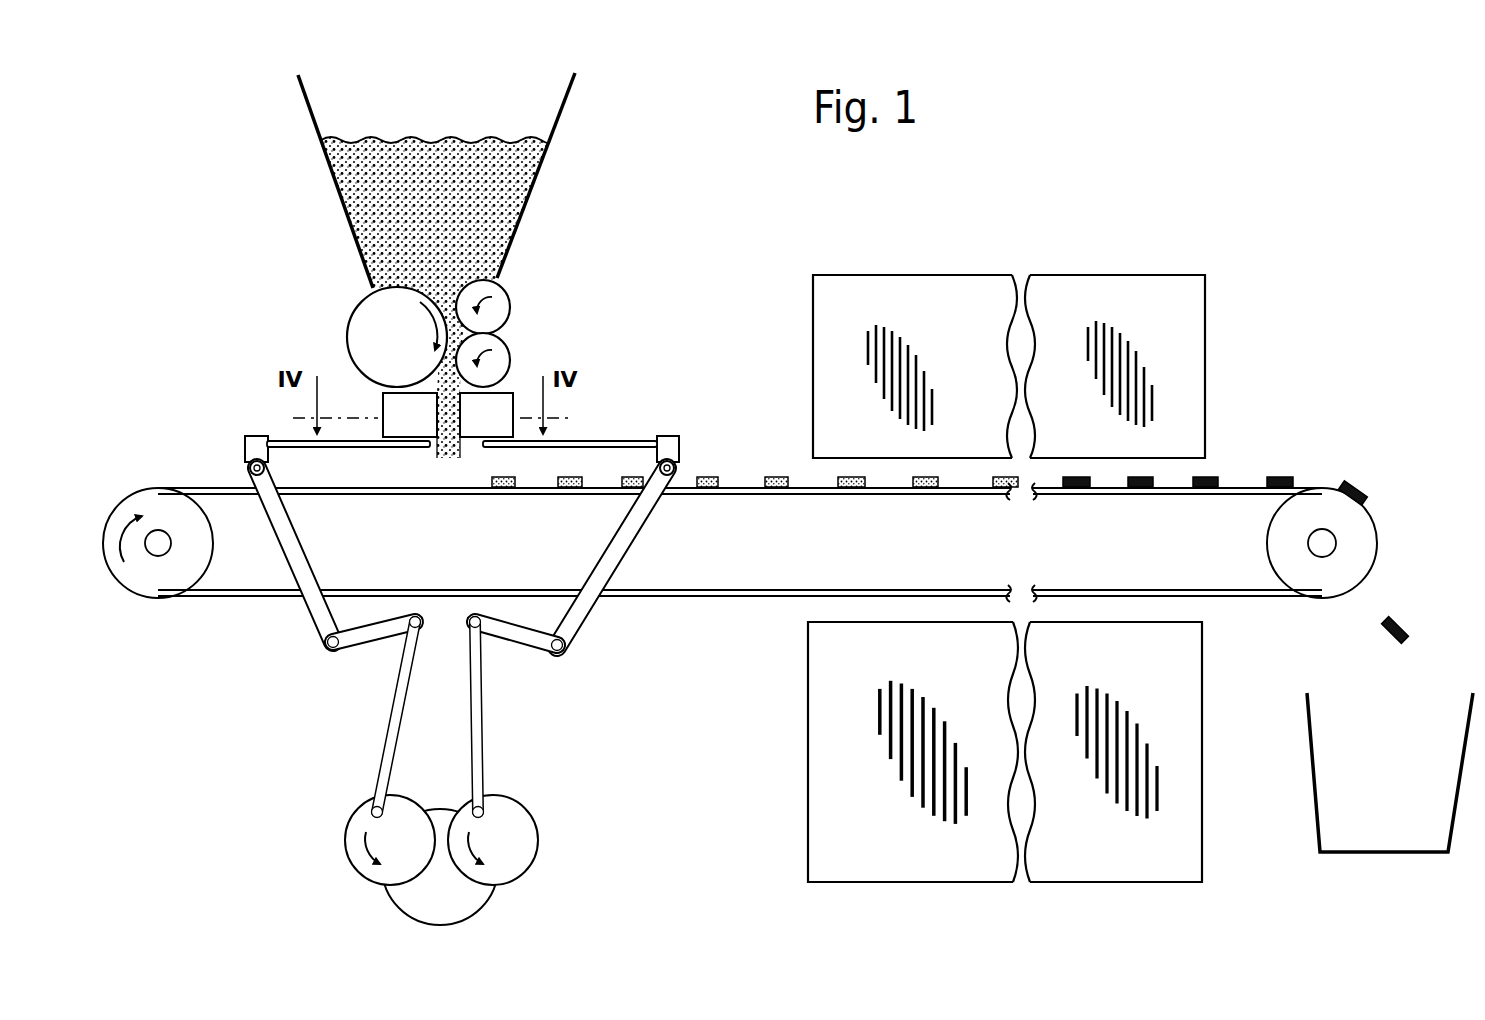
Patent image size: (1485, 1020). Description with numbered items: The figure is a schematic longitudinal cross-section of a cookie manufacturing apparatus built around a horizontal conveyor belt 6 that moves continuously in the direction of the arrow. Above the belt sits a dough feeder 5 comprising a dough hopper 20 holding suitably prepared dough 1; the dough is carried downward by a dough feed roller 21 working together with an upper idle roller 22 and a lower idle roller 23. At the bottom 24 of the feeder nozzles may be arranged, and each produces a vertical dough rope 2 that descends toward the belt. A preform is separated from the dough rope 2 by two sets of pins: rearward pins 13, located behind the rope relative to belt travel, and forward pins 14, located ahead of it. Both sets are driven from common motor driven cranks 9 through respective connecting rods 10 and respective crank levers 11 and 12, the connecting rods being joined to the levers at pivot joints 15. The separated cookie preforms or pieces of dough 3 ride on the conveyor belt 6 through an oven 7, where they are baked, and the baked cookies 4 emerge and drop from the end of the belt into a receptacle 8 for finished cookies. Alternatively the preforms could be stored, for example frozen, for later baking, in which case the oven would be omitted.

The dough 1 is at (442, 152).
The dough rope 2 is at (437, 451).
The cookie preforms 3 is at (509, 477).
The baked cookies 4 is at (1280, 477).
The dough feeder 5 is at (340, 207).
The conveyor belt 6 is at (223, 486).
The oven 7 is at (908, 292).
The receptacle 8 is at (1309, 793).
The cranks 9 is at (346, 841).
The connecting rods 10 is at (384, 753).
The crank lever 11 is at (317, 632).
The crank lever 12 is at (580, 630).
The rearward pins 13 is at (284, 440).
The forward pins 14 is at (625, 440).
The links 15 is at (335, 651).
The dough hopper 20 is at (542, 163).
The dough feed roller 21 is at (367, 316).
The upper idle roller 22 is at (507, 305).
The lower idle roller 23 is at (503, 357).
The bottom of feeder 24 is at (396, 412).